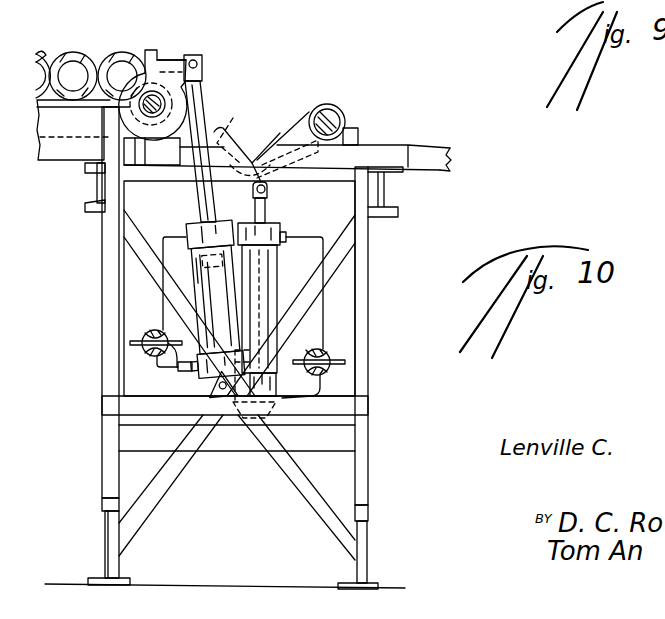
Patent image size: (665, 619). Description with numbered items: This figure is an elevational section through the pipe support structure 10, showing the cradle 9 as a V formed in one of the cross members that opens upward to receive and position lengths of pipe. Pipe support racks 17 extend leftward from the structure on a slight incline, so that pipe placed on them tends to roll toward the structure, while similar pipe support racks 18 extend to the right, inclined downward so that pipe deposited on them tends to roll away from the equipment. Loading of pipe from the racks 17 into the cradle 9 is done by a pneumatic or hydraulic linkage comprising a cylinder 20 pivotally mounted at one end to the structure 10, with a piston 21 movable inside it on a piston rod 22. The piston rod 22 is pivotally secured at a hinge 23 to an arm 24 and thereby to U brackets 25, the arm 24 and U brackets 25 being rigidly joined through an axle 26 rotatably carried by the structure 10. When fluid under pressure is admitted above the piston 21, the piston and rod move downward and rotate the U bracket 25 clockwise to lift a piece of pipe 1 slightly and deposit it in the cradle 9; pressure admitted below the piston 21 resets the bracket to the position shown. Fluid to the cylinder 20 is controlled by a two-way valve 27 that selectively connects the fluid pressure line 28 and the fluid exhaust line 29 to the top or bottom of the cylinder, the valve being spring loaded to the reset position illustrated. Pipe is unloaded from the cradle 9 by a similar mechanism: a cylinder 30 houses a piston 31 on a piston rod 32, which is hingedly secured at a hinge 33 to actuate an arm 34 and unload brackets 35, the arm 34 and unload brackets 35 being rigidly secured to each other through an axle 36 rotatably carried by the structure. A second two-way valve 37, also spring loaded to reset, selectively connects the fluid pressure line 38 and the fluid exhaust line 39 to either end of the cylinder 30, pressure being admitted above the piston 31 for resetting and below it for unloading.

The pipe 1 is at (116, 53).
The cradle 9 is at (252, 160).
The pipe support structure 10 is at (107, 253).
The pipe support racks 17 is at (60, 150).
The pipe support racks 18 is at (437, 153).
The cylinder 20 is at (207, 286).
The piston 21 is at (195, 260).
The piston rod 22 is at (197, 200).
The hinge 23 is at (199, 57).
The arm 24 is at (174, 60).
The U brackets 25 is at (149, 50).
The axle 26 is at (157, 100).
The two-way valve 27 is at (144, 354).
The fluid pressure line 28 is at (140, 339).
The fluid exhaust line 29 is at (165, 371).
The cylinder 30 is at (268, 263).
The piston 31 is at (276, 378).
The piston rod 32 is at (266, 215).
The hinge 33 is at (270, 191).
The arm 34 is at (290, 133).
The unload brackets 35 is at (240, 143).
The axle 36 is at (345, 118).
The two-way valve 37 is at (335, 375).
The fluid pressure line 38 is at (332, 348).
The fluid exhaust line 39 is at (305, 355).